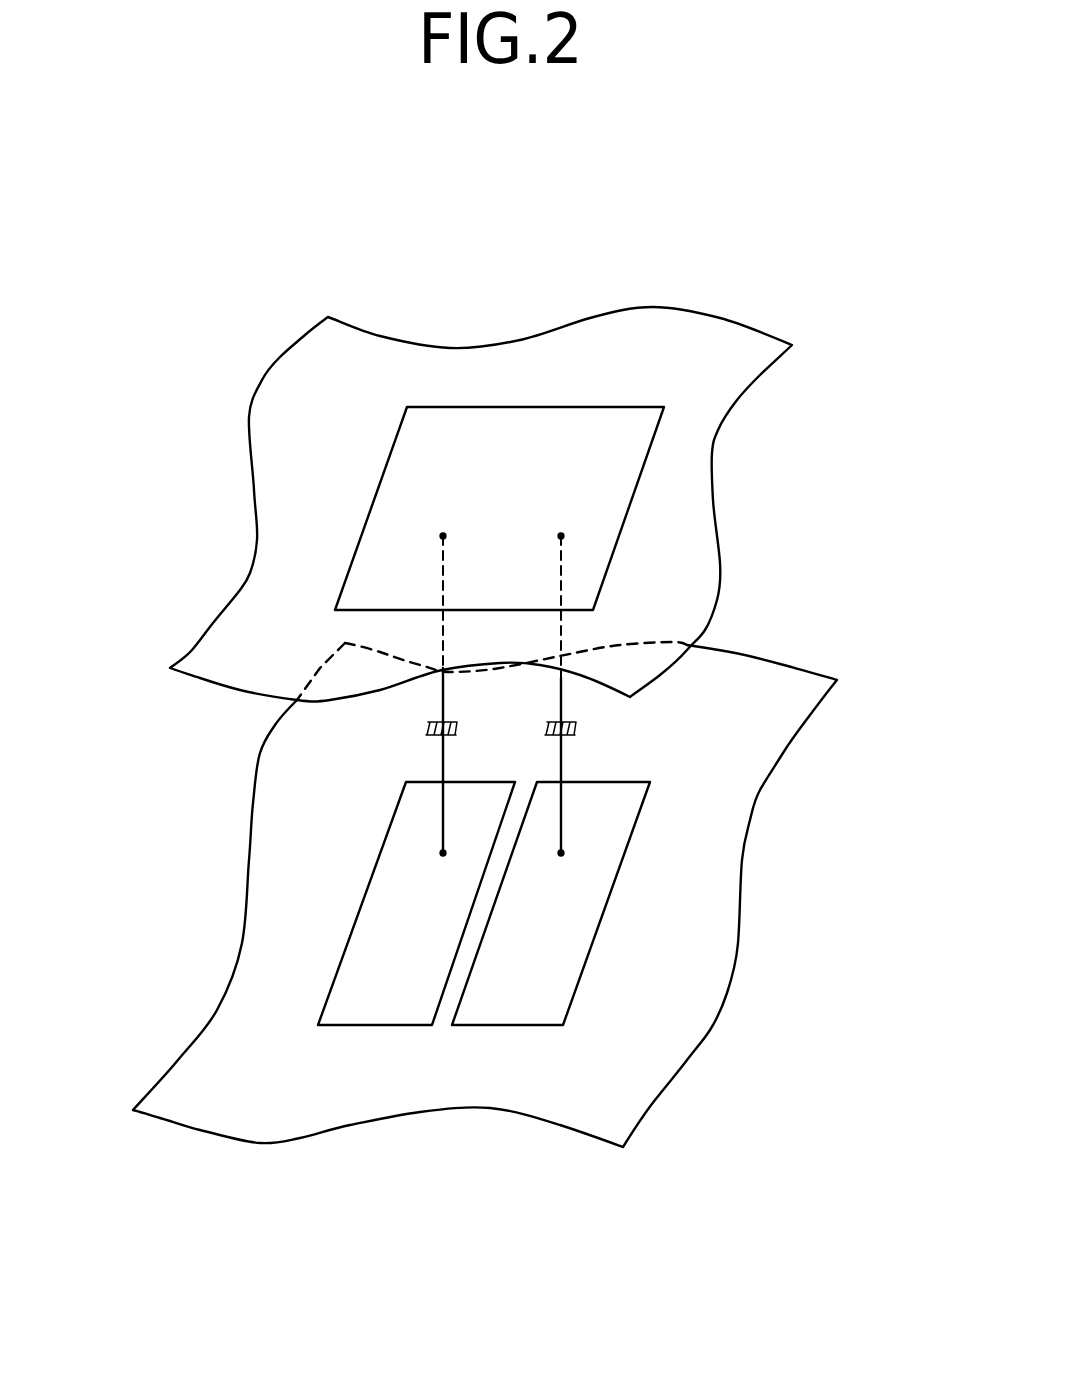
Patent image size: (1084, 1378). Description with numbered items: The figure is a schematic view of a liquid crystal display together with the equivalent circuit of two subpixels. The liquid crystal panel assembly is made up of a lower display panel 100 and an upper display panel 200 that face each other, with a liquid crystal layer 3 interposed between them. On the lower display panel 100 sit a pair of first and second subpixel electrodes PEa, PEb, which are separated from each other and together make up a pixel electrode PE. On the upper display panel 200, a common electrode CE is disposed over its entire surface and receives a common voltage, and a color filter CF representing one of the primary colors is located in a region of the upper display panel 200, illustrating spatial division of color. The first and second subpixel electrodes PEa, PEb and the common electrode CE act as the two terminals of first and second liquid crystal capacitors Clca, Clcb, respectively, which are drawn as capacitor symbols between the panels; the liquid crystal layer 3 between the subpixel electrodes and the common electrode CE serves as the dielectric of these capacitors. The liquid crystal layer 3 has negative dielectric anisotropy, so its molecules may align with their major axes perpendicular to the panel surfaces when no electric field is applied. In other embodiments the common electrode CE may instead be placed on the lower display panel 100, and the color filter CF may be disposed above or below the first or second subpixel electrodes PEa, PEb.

The liquid crystal layer 3 is at (168, 814).
The upper display panel 200 is at (744, 535).
The common electrode CE is at (713, 475).
The color filter CF is at (620, 543).
The lower display panel 100 is at (767, 869).
The pixel electrode PE is at (487, 1242).
The first subpixel electrode PEa is at (375, 1025).
The second subpixel electrode PEb is at (505, 1025).
The first liquid crystal capacitor Clca is at (458, 722).
The second liquid crystal capacitor Clcb is at (577, 722).